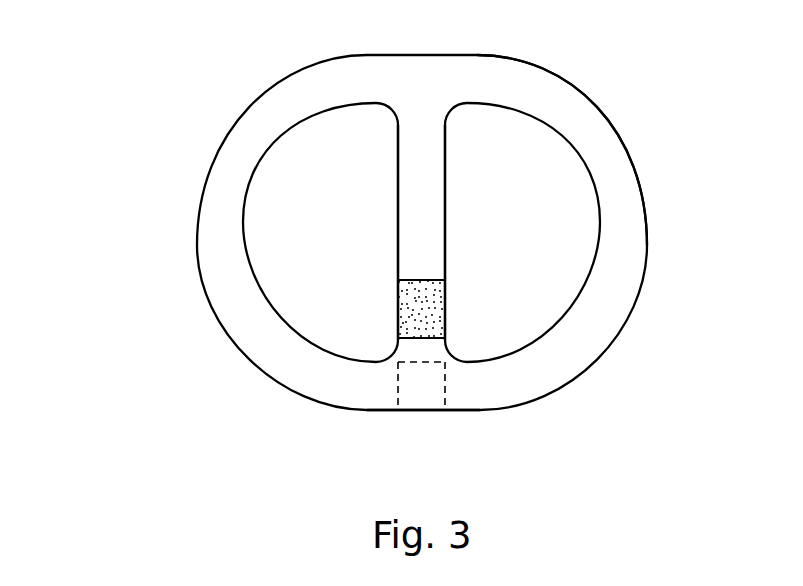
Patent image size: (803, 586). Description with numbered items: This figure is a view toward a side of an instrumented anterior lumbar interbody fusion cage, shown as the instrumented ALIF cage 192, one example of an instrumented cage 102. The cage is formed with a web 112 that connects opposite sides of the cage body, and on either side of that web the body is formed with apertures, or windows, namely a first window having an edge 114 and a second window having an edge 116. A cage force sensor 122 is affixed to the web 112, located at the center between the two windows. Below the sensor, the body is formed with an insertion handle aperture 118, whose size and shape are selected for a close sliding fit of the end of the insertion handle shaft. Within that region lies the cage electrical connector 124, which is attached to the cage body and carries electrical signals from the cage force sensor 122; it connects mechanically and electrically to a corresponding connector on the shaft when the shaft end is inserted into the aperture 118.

The instrumented cage 102 is at (147, 73).
The web 112 is at (398, 157).
The edge of first window 114 is at (245, 213).
The edge of second window 116 is at (590, 190).
The insertion handle aperture 118 is at (445, 393).
The cage force sensor 122 is at (408, 280).
The cage electrical connector 124 is at (427, 363).
The instrumented ALIF cage 192 is at (593, 105).